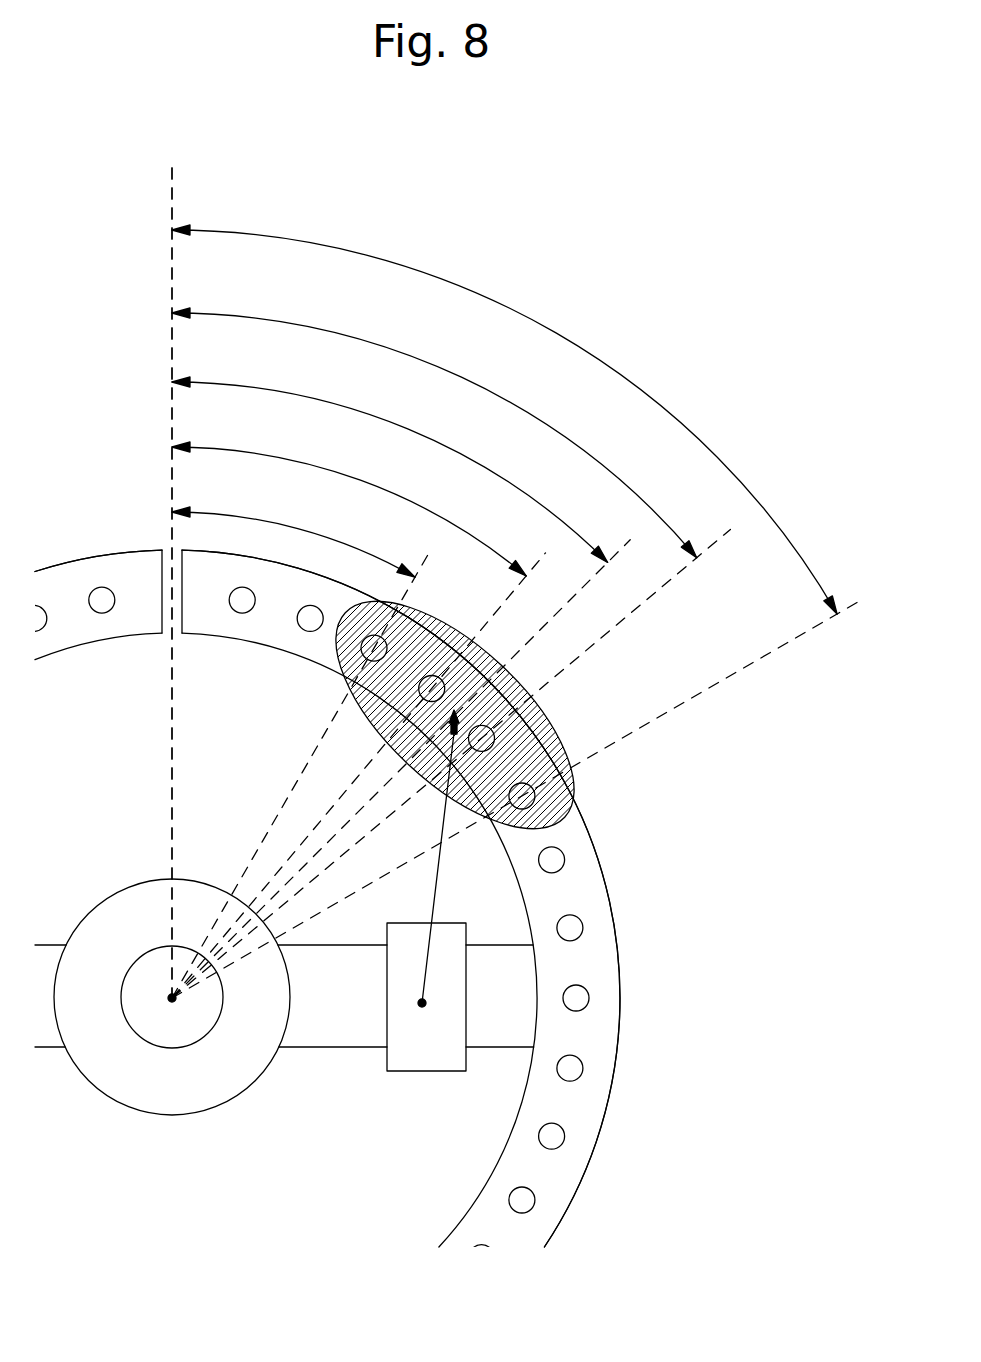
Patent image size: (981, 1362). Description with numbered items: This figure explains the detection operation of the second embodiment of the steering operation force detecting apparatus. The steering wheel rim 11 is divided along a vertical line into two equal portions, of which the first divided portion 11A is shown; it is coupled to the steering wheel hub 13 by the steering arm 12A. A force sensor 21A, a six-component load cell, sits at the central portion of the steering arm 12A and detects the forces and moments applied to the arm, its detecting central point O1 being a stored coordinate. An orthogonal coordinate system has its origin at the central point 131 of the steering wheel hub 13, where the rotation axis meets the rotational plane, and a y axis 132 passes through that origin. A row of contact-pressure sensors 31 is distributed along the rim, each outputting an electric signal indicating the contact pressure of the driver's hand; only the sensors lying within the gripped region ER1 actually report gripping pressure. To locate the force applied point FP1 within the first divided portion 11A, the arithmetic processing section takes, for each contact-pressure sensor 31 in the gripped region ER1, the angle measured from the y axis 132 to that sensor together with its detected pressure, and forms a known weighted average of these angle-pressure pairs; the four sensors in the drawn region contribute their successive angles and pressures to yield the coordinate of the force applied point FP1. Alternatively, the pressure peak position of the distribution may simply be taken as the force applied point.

The steering wheel rim 11 is at (205, 557).
The first divided portion 11A is at (605, 973).
The steering arm 12A is at (318, 1028).
The steering wheel hub 13 is at (142, 1087).
The central point 131 is at (172, 997).
The y axis 132 is at (172, 278).
The force sensor 21A is at (405, 1052).
The detecting central point O1 is at (423, 1010).
The contact-pressure sensor 31 is at (583, 1069).
The gripped region ER1 is at (350, 702).
The force applied point FP1 is at (447, 727).